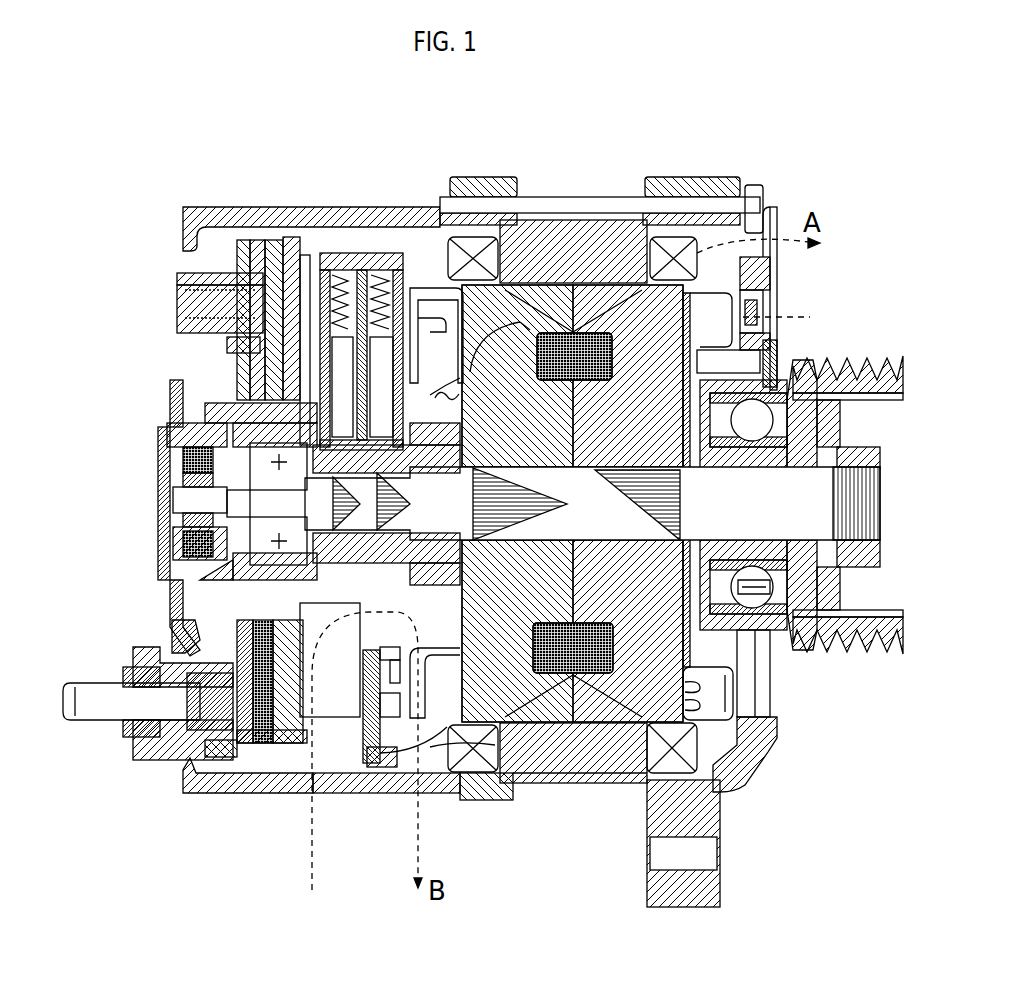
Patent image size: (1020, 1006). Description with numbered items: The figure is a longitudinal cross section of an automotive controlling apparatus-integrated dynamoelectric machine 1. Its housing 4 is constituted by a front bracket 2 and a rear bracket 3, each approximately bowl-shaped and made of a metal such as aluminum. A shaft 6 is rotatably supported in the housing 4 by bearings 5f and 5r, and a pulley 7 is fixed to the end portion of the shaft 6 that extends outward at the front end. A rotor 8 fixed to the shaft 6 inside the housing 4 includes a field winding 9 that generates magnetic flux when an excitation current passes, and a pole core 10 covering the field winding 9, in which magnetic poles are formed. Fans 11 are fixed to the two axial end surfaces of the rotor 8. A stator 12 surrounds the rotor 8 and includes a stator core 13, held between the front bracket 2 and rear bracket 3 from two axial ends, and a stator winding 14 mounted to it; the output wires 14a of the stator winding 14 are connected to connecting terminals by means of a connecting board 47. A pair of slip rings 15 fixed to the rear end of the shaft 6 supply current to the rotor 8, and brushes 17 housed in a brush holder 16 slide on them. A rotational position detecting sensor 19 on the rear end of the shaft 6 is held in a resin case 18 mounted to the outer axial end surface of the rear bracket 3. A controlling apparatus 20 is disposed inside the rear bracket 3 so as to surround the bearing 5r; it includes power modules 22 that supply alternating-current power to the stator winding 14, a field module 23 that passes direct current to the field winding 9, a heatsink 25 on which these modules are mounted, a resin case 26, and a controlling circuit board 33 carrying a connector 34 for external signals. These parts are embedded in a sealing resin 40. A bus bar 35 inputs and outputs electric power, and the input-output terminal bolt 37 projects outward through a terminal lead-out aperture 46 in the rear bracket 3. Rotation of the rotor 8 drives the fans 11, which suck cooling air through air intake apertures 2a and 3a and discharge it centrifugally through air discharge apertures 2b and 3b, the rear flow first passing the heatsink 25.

The automotive controlling apparatus-integrated dynamoelectric machine 1 is at (164, 111).
The front bracket 2 is at (762, 484).
The air intake apertures 2a is at (760, 306).
The air discharge apertures 2b is at (772, 230).
The rear bracket 3 is at (207, 206).
The air intake apertures 3a is at (334, 792).
The air discharge apertures 3b is at (440, 792).
The housing 4 is at (747, 790).
The bearing 5f is at (790, 386).
The bearing 5r is at (160, 577).
The shaft 6 is at (825, 520).
The pulley 7 is at (868, 372).
The rotor 8 is at (572, 410).
The field winding 9 is at (578, 325).
The pole core 10 is at (608, 300).
The fans 11 is at (740, 710).
The stator 12 is at (563, 554).
The stator core 13 is at (573, 777).
The stator winding 14 is at (667, 760).
The output wires 14a is at (430, 749).
The slip rings 15 is at (333, 480).
The brush holder 16 is at (340, 258).
The brushes 17 is at (330, 398).
The resin case 18 is at (180, 422).
The rotational position detecting sensor 19 is at (175, 476).
The controlling apparatus 20 is at (273, 240).
The power modules 22 is at (268, 745).
The field module 23 is at (200, 273).
The heatsink 25 is at (292, 237).
The resin case 26 is at (246, 240).
The controlling circuit board 33 is at (245, 745).
The connector 34 is at (177, 297).
The bus bar 35 is at (205, 752).
The input-output terminal bolt 37 is at (93, 725).
The sealing resin 40 is at (220, 757).
The terminal lead-out aperture 46 is at (168, 656).
The connecting board 47 is at (383, 768).